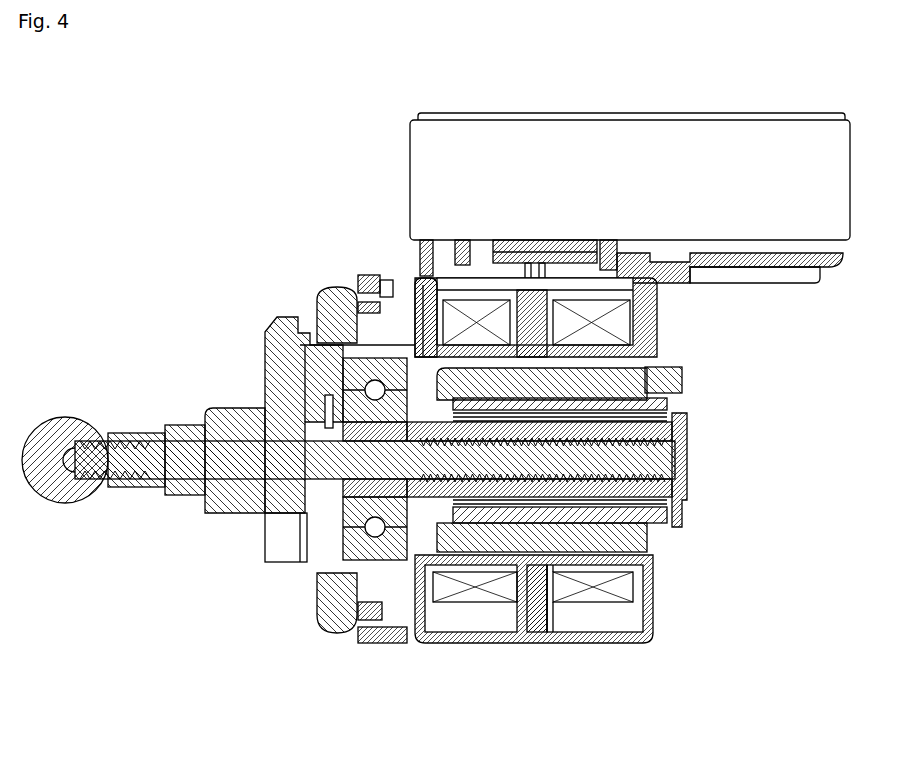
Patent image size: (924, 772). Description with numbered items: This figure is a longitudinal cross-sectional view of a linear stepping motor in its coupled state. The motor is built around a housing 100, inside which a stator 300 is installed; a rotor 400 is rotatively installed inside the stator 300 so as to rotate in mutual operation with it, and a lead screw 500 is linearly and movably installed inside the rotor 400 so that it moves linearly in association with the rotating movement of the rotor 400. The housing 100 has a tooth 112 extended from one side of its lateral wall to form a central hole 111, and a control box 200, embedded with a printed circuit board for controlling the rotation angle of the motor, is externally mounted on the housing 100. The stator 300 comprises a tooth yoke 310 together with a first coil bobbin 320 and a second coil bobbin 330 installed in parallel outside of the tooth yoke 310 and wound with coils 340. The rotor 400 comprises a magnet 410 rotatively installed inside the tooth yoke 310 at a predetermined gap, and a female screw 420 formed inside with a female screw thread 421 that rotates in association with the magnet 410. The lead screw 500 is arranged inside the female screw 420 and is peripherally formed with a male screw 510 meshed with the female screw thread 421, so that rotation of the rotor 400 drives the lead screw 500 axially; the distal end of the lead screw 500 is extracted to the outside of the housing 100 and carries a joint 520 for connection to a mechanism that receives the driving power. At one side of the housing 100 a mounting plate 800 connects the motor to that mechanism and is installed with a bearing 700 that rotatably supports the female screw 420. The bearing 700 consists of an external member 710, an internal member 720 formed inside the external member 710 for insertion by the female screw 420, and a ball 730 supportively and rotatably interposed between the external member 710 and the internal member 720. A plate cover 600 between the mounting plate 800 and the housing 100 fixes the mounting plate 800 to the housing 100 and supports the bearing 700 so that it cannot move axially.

The housing 100 is at (460, 637).
The central hole 111 is at (418, 358).
The tooth 112 is at (440, 365).
The control box 200 is at (567, 150).
The stator 300 is at (560, 657).
The tooth yoke 310 is at (538, 620).
The first coil bobbin 320 is at (530, 630).
The second coil bobbin 330 is at (553, 612).
The coils 340 is at (607, 592).
The rotor 400 is at (627, 452).
The magnet 410 is at (608, 383).
The female screw 420 is at (610, 428).
The female screw thread 421 is at (482, 440).
The lead screw 500 is at (227, 459).
The male screw 510 is at (640, 483).
The joint 520 is at (72, 497).
The plate cover 600 is at (307, 558).
The bearing 700 is at (273, 476).
The external member 710 is at (353, 563).
The internal member 720 is at (352, 507).
The ball 730 is at (359, 543).
The mounting plate 800 is at (280, 352).